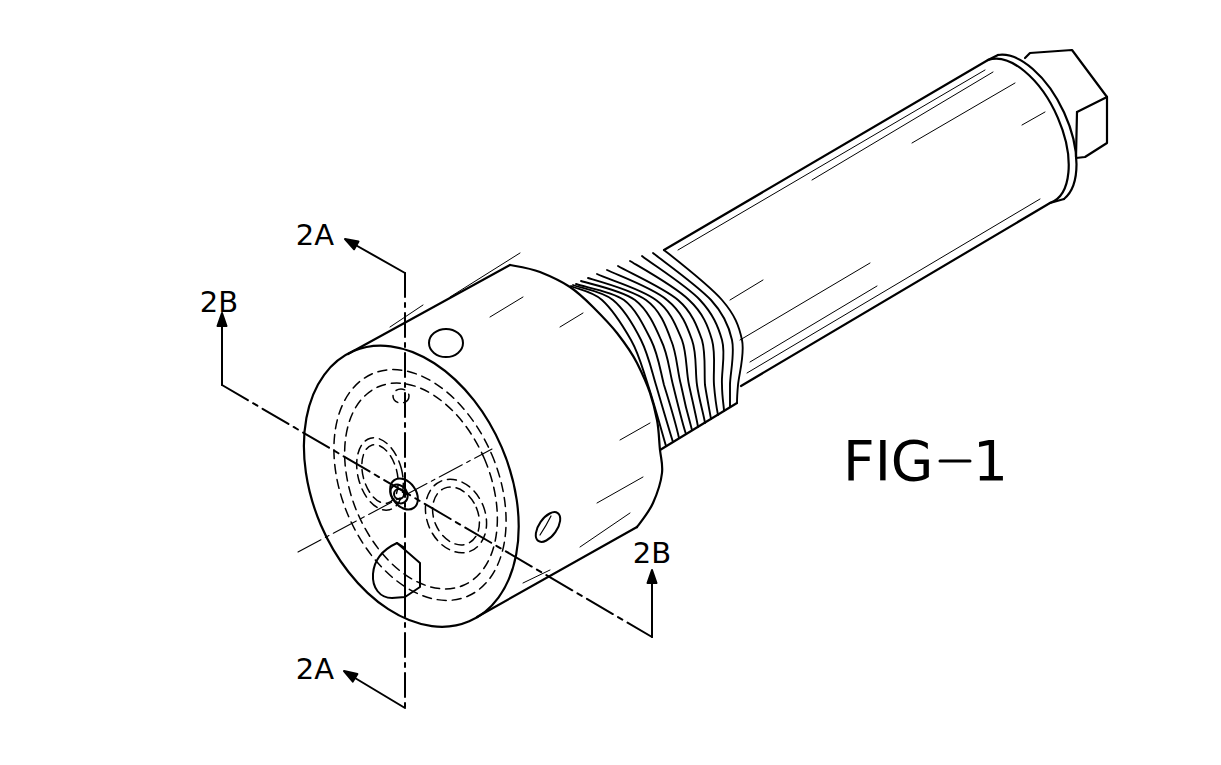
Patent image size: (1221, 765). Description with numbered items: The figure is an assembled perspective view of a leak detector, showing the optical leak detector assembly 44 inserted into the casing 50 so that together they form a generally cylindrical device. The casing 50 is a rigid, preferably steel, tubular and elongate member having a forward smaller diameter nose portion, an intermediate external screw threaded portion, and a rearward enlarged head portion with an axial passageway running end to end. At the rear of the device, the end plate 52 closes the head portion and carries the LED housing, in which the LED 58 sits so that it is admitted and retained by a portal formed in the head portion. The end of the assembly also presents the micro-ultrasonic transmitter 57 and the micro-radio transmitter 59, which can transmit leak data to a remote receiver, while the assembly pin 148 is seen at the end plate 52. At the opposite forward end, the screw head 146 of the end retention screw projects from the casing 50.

The optical leak detector assembly 44 is at (678, 120).
The casing 50 is at (875, 306).
The end plate 52 is at (447, 610).
The micro-ultrasonic transmitter 57 is at (392, 496).
The LED 58 is at (447, 337).
The micro-radio transmitter 59 is at (475, 491).
The screw head 146 is at (1078, 78).
The assembly pin 148 is at (388, 580).